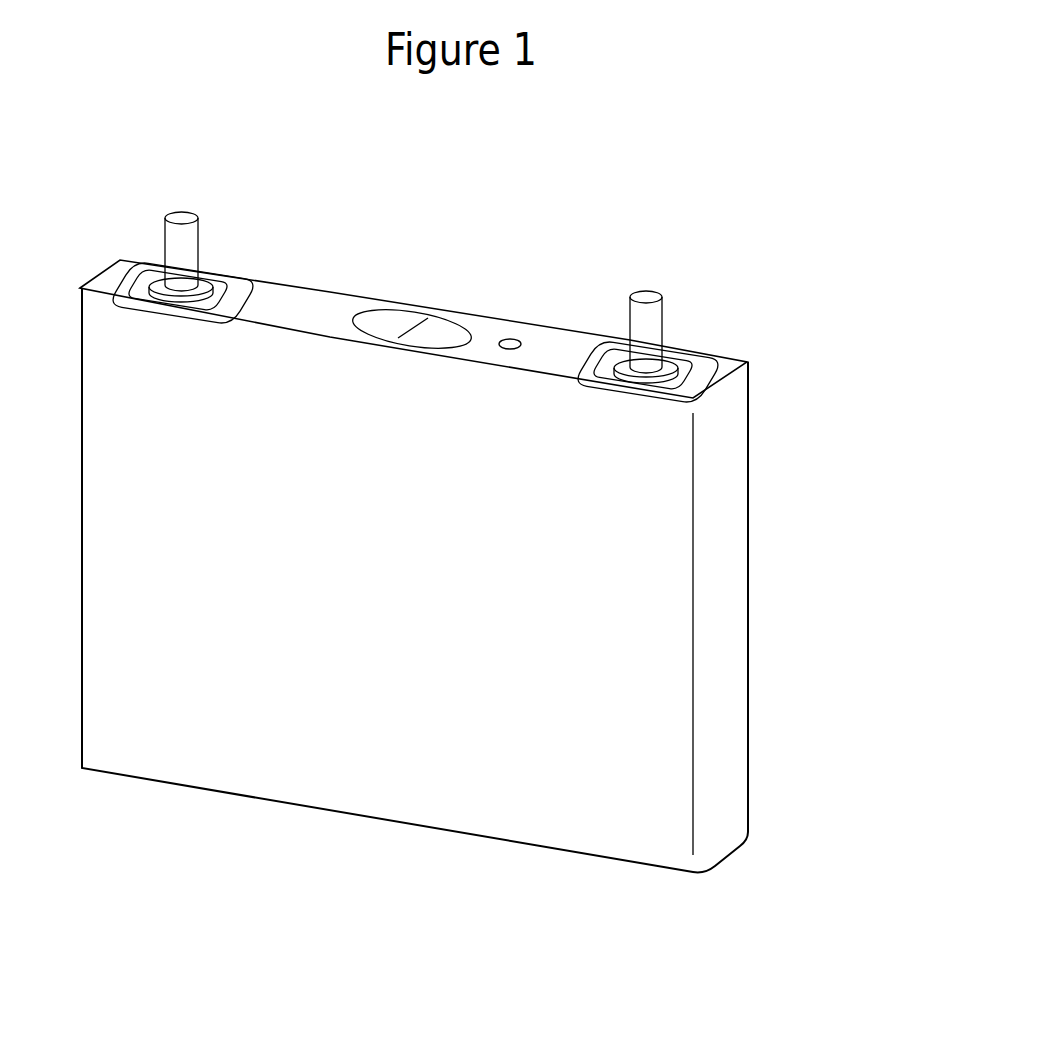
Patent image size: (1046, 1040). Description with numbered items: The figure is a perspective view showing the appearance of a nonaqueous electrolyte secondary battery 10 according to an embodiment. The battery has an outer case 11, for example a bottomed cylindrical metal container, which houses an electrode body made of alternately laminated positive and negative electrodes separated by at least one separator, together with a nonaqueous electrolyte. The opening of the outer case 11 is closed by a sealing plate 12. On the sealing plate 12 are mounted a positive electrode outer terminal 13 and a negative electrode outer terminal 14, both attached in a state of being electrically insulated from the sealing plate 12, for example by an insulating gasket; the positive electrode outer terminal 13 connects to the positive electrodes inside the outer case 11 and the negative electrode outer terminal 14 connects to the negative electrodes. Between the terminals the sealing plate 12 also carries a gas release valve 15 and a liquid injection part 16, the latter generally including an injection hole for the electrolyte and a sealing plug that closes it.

The nonaqueous electrolyte secondary battery 10 is at (792, 183).
The outer case 11 is at (732, 670).
The sealing plate 12 is at (345, 296).
The positive electrode outer terminal 13 is at (186, 214).
The negative electrode outer terminal 14 is at (650, 297).
The gas release valve 15 is at (440, 332).
The liquid injection part 16 is at (510, 340).